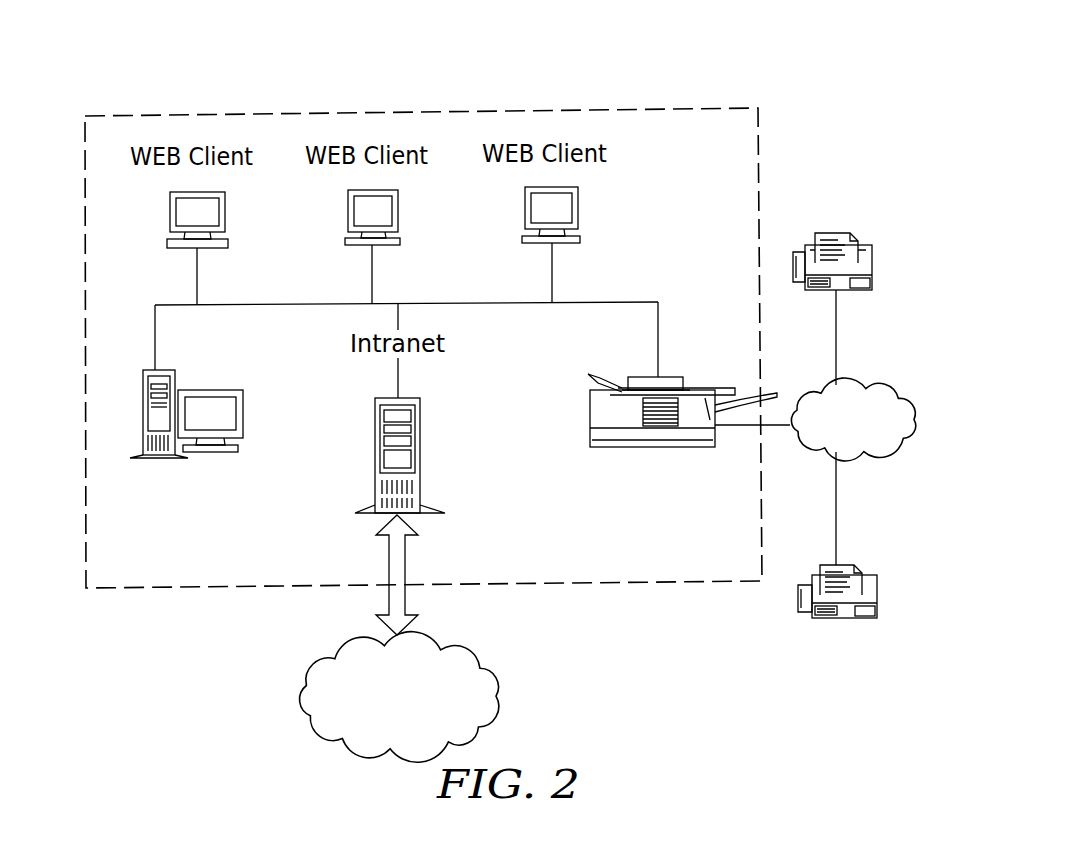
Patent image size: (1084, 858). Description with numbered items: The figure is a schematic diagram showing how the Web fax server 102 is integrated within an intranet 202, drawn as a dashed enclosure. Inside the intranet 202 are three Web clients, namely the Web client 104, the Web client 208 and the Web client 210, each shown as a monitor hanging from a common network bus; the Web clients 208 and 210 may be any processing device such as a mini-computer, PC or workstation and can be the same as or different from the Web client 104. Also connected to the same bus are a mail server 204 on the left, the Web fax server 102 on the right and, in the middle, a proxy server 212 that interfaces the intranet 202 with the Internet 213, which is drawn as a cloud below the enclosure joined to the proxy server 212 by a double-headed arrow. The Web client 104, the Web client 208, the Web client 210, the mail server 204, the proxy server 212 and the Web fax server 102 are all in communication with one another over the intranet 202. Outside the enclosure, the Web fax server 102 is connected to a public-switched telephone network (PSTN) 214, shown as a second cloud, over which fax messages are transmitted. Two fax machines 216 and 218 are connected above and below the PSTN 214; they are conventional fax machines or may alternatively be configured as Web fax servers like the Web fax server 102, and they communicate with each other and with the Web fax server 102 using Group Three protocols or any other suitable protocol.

The Web fax server 102 is at (698, 380).
The Web client 104 is at (170, 212).
The intranet 202 is at (140, 573).
The mail server 204 is at (175, 380).
The Web client 208 is at (348, 212).
The Web client 210 is at (525, 210).
The proxy server 212 is at (420, 412).
The Internet 213 is at (420, 694).
The public-switched telephone network (PSTN) 214 is at (873, 382).
The fax machine 216 is at (872, 253).
The fax machine 218 is at (873, 570).